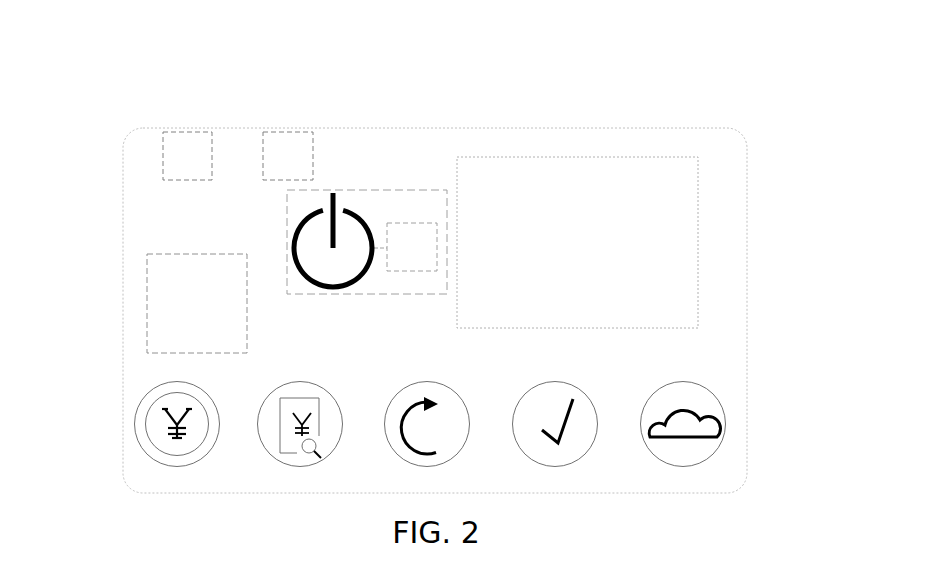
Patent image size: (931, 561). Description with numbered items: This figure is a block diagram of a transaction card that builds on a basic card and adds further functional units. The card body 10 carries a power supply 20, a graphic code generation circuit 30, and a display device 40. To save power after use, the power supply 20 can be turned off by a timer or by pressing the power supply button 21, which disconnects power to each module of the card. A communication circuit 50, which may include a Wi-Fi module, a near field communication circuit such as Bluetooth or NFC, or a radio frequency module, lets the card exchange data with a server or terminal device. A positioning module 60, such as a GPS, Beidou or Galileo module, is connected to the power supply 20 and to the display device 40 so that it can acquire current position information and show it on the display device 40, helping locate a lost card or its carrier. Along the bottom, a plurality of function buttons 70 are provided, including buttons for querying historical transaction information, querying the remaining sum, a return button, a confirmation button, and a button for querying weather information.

The card body 10 is at (433, 128).
The power supply 20 is at (366, 190).
The power supply button 21 is at (317, 252).
The graphic code generation circuit 30 is at (197, 303).
The display device 40 is at (595, 195).
The communication circuit 50 is at (188, 156).
The positioning module 60 is at (288, 155).
The function button 70 is at (684, 465).